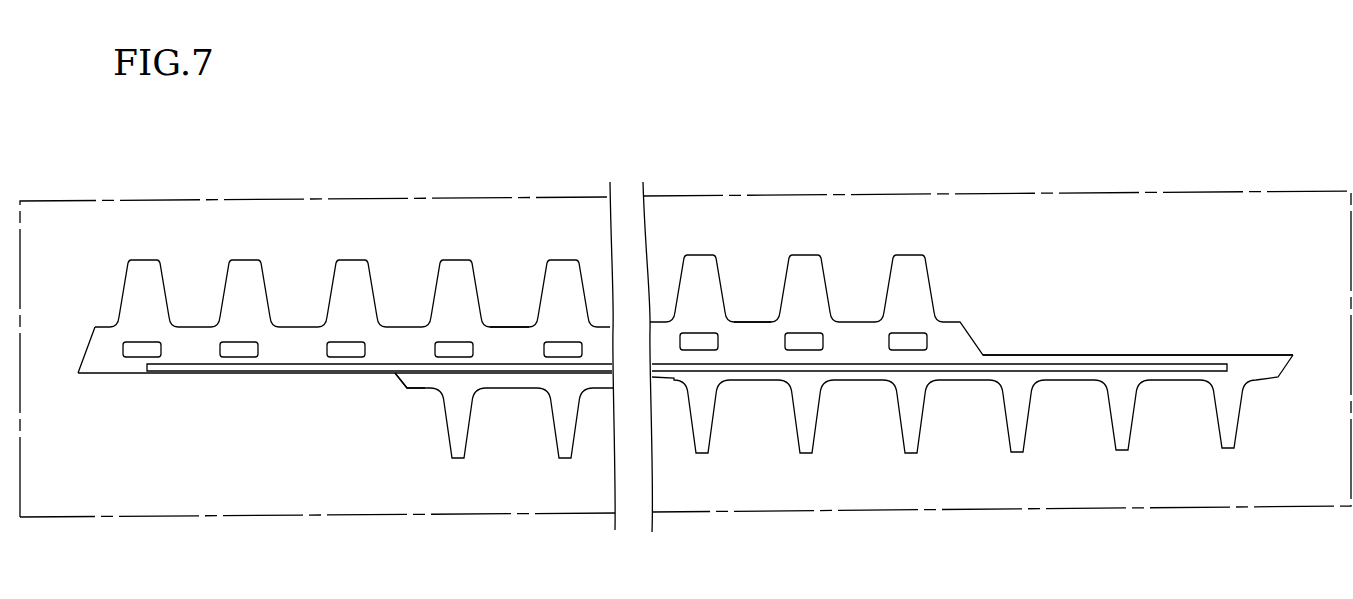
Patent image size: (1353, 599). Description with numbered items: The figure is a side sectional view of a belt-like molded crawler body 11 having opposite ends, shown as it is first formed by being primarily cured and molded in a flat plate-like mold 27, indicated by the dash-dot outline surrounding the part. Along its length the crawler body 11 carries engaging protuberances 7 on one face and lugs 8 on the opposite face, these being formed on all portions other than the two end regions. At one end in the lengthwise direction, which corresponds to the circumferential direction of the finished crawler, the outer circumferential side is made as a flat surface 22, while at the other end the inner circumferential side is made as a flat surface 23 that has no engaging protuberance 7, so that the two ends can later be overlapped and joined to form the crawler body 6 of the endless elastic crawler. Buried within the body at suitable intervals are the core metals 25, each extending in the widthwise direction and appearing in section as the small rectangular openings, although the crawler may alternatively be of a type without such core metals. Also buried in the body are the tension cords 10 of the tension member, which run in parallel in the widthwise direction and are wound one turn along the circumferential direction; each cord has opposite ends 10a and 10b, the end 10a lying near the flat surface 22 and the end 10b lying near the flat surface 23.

The crawler body 6 is at (747, 322).
The engaging protuberances 7 is at (453, 258).
The lugs 8 is at (802, 455).
The tension cords 10 is at (420, 370).
The end of tension cord 10a is at (258, 373).
The end of tension cord 10b is at (1140, 367).
The crawler body 11 is at (512, 287).
The flat surface 22 is at (117, 377).
The flat surface 23 is at (1073, 355).
The core metals 25 is at (338, 357).
The flat plate-like mold 27 is at (745, 193).